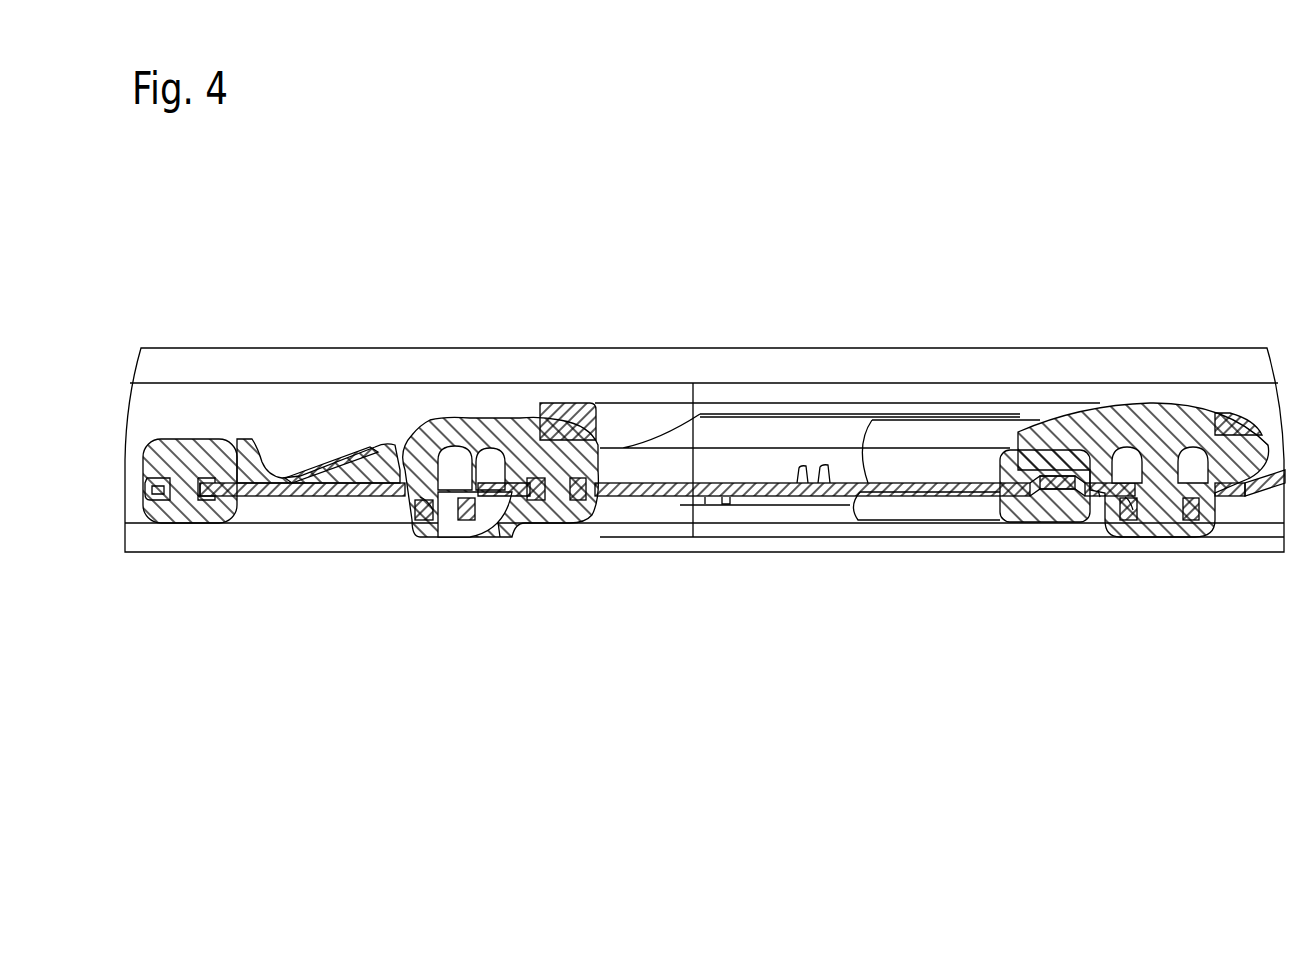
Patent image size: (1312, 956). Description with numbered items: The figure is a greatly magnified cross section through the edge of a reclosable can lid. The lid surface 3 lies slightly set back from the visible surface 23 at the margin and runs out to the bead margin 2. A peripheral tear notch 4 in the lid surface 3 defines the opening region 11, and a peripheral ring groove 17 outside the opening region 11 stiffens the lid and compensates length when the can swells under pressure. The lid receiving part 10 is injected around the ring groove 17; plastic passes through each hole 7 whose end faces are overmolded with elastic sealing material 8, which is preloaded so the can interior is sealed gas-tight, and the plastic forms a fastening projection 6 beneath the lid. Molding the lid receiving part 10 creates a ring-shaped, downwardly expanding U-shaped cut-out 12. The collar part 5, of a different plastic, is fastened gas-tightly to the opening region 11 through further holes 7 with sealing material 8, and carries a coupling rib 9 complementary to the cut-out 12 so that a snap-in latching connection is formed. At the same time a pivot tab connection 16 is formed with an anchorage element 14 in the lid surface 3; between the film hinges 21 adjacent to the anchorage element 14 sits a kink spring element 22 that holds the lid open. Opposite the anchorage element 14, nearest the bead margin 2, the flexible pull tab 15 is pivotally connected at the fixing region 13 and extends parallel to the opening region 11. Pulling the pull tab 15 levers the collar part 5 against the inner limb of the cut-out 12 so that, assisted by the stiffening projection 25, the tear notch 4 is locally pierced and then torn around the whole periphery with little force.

The bead margin 2 is at (888, 365).
The lid surface 3 is at (342, 492).
The tear notch 4 is at (500, 522).
The collar part 5 is at (534, 458).
The fastening projection 6 is at (1023, 505).
The hole 7 is at (185, 500).
The elastic sealing material 8 is at (162, 493).
The coupling rib 9 is at (456, 468).
The lid receiving part 10 is at (490, 468).
The opening region 11 is at (800, 483).
The cut-out 12 is at (435, 462).
The fixing region 13 is at (1237, 430).
The anchorage element 14 is at (185, 440).
The pull tab 15 is at (751, 410).
The pivot tab connection 16 is at (290, 492).
The ring groove 17 is at (427, 500).
The film hinge 21 is at (262, 445).
The kink spring element 22 is at (320, 455).
The visible surface 23 is at (1275, 484).
The projection 25 is at (1040, 482).